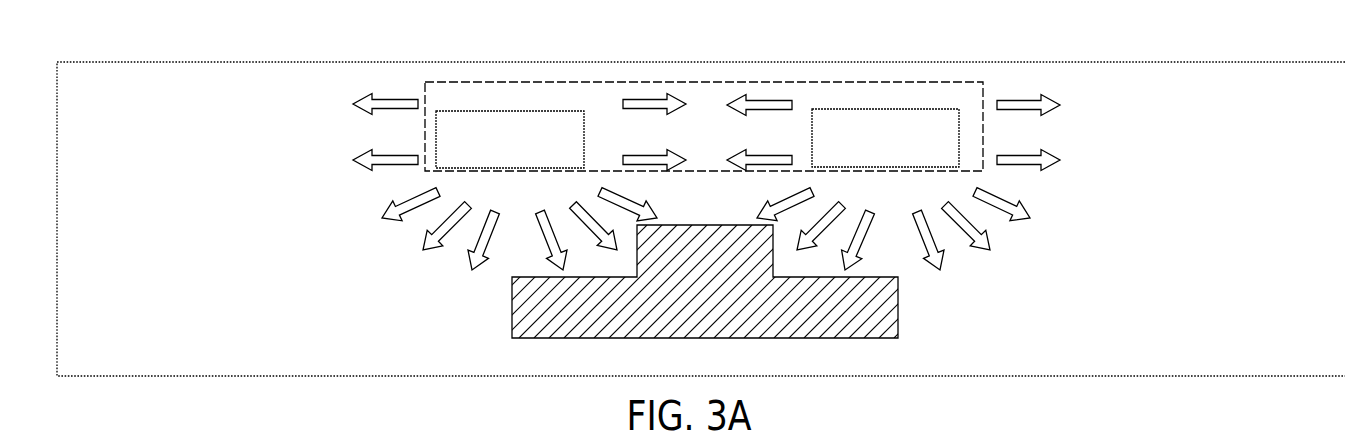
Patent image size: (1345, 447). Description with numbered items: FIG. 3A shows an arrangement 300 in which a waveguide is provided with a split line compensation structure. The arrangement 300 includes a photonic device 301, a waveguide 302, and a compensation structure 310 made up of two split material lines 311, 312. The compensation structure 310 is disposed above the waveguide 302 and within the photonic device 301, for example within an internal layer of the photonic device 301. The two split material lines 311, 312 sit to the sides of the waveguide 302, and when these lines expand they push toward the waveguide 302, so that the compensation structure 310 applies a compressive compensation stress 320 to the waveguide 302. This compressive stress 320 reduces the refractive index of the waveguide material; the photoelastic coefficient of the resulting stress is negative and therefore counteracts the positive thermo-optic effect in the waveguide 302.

The arrangement 300 is at (1218, 43).
The photonic device 301 is at (1269, 343).
The waveguide 302 is at (684, 303).
The compensation structure 310 is at (817, 82).
The split material line 311 is at (501, 150).
The split material line 312 is at (877, 148).
The compressive compensation stress 320 is at (494, 202).